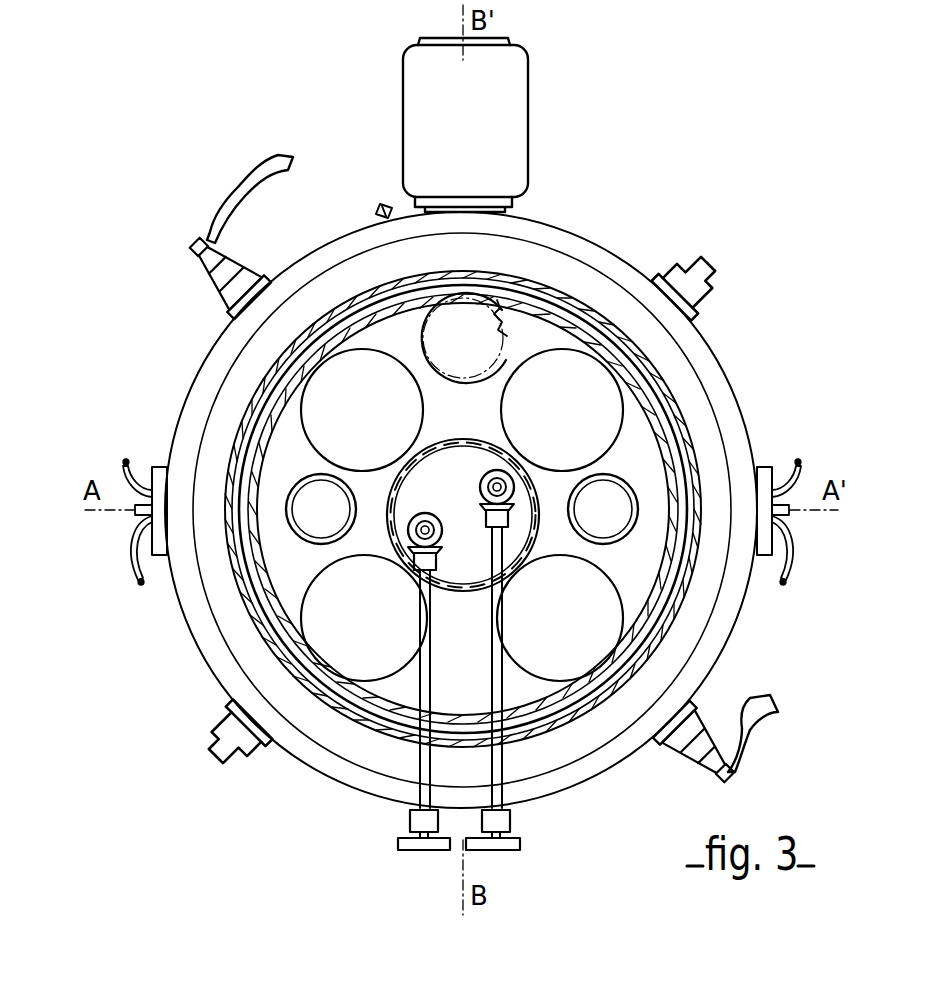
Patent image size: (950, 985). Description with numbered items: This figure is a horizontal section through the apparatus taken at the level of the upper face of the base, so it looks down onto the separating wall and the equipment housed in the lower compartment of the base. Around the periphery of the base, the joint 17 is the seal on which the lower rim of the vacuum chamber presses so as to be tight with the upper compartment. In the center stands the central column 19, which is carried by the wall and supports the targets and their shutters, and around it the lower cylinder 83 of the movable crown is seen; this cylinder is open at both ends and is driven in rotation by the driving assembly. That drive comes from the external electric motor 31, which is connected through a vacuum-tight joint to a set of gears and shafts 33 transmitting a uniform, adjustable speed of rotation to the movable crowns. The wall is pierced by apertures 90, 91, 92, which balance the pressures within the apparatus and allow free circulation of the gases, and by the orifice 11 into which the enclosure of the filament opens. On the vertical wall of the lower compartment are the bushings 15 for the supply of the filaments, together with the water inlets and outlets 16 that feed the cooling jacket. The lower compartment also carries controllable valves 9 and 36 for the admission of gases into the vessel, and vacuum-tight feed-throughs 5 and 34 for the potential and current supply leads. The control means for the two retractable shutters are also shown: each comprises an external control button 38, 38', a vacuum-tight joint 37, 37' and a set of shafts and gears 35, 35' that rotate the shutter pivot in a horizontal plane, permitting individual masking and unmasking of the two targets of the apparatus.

The vacuum-tight feed-through 5 is at (380, 207).
The controllable valve 9 is at (680, 277).
The orifice 11 is at (320, 520).
The bushing 15 is at (140, 562).
The water inlets and outlets 16 is at (140, 575).
The joint 17 is at (320, 323).
The central column 19 is at (388, 507).
The external electric motor 31 is at (445, 146).
The set of gears and shafts 33 is at (497, 300).
The vacuum-tight feed-through 34 is at (730, 776).
The set of shafts and gears 35 is at (586, 693).
The set of shafts and gears 35' is at (318, 714).
The controllable valve 36 is at (218, 745).
The vacuum-tight joint 37 is at (557, 721).
The vacuum-tight joint 37' is at (350, 743).
The external control button 38 is at (511, 863).
The external control button 38' is at (400, 863).
The lower cylinder 83 is at (392, 520).
The aperture 90 is at (578, 640).
The aperture 91 is at (560, 368).
The aperture 92 is at (328, 408).